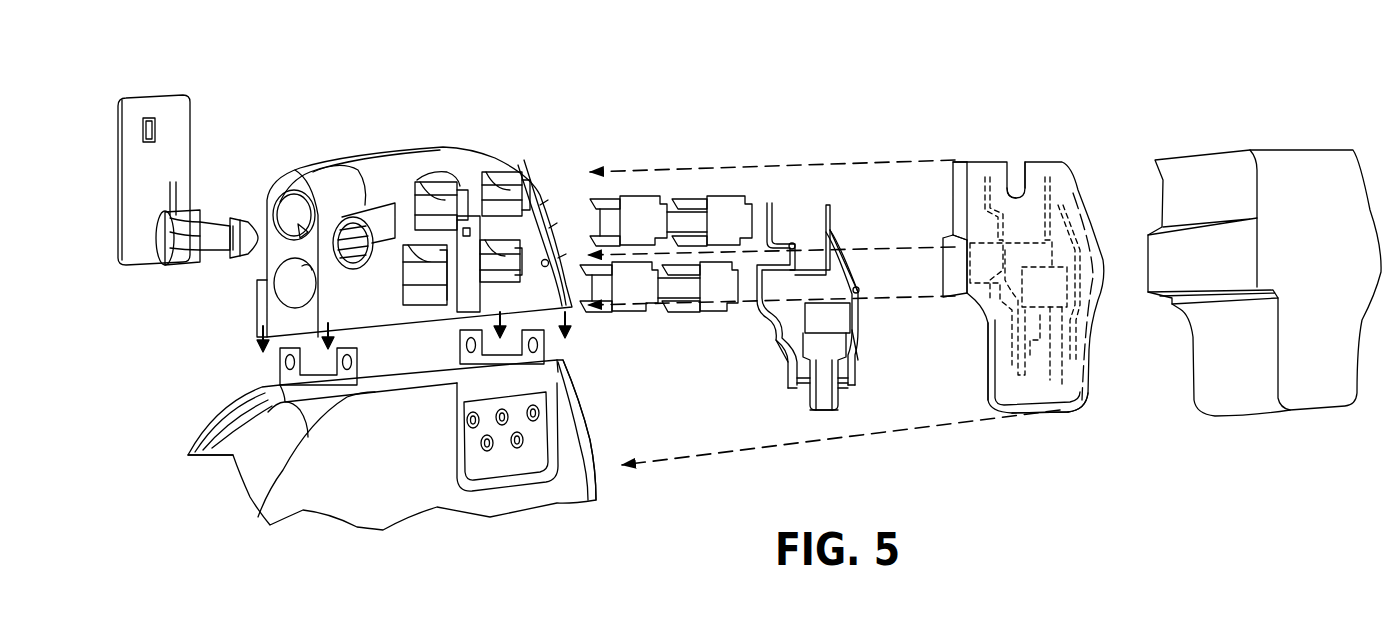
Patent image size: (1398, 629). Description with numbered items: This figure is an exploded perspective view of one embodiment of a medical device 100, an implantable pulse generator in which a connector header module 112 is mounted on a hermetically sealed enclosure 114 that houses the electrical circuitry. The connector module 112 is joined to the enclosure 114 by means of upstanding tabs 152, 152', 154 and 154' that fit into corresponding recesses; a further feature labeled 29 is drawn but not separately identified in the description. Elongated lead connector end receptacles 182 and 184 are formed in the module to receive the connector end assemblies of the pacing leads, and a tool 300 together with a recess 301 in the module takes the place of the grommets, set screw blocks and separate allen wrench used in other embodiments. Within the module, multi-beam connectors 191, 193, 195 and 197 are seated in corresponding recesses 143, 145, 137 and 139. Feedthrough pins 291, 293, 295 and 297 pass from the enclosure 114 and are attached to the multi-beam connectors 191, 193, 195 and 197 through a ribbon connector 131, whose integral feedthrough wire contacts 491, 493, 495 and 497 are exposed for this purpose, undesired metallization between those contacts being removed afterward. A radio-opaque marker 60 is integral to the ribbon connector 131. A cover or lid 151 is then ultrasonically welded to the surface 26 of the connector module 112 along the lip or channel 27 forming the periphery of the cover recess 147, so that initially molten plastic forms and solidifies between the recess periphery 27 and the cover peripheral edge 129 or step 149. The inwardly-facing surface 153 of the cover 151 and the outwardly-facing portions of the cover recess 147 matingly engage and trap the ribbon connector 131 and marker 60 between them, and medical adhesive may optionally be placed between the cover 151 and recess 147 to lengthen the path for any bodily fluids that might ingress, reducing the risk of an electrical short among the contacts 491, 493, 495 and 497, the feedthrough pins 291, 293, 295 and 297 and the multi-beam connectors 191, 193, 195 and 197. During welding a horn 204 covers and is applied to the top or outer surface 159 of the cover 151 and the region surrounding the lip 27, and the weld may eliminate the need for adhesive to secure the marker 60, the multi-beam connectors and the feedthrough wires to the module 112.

The tool 300 is at (113, 113).
The surface 26 is at (385, 165).
The recess 301 is at (353, 230).
The recess 143 is at (445, 185).
The connector header module 112 is at (510, 112).
The recess 145 is at (512, 178).
The cover recess 147 is at (476, 240).
The lip or channel 27 is at (552, 224).
The lead connector end receptacle 182 is at (292, 208).
The lead connector end receptacle 184 is at (287, 286).
The recess 137 is at (415, 290).
The upstanding tab 152 is at (373, 335).
The recess 139 is at (498, 285).
The upstanding tab 154 is at (272, 360).
The upstanding tab 154' is at (460, 339).
The upstanding tab 152' is at (585, 337).
The multi-beam connector 191 is at (648, 205).
The multi-beam connector 193 is at (722, 208).
The multi-beam connector 195 is at (640, 316).
The multi-beam connector 197 is at (718, 316).
The ribbon connector 131 is at (848, 200).
The radio-opaque marker 60 is at (845, 288).
The feedthrough wire contact 495 is at (797, 390).
The feedthrough wire contact 497 is at (813, 412).
The feedthrough wire contact 491 is at (838, 412).
The feedthrough wire contact 493 is at (856, 390).
The cover 151 is at (1062, 128).
The top or outer surface 159 is at (1040, 215).
The step 149 is at (982, 322).
The cover peripheral edge 129 is at (988, 358).
The inwardly-facing surface 153 is at (1015, 384).
The horn 204 is at (1240, 130).
The medical device 100 is at (965, 486).
The hermetically sealed enclosure 114 is at (320, 532).
The socket 29 is at (563, 412).
The feedthrough pin 295 is at (468, 425).
The feedthrough pin 297 is at (487, 452).
The feedthrough pin 291 is at (519, 448).
The feedthrough pin 293 is at (582, 497).